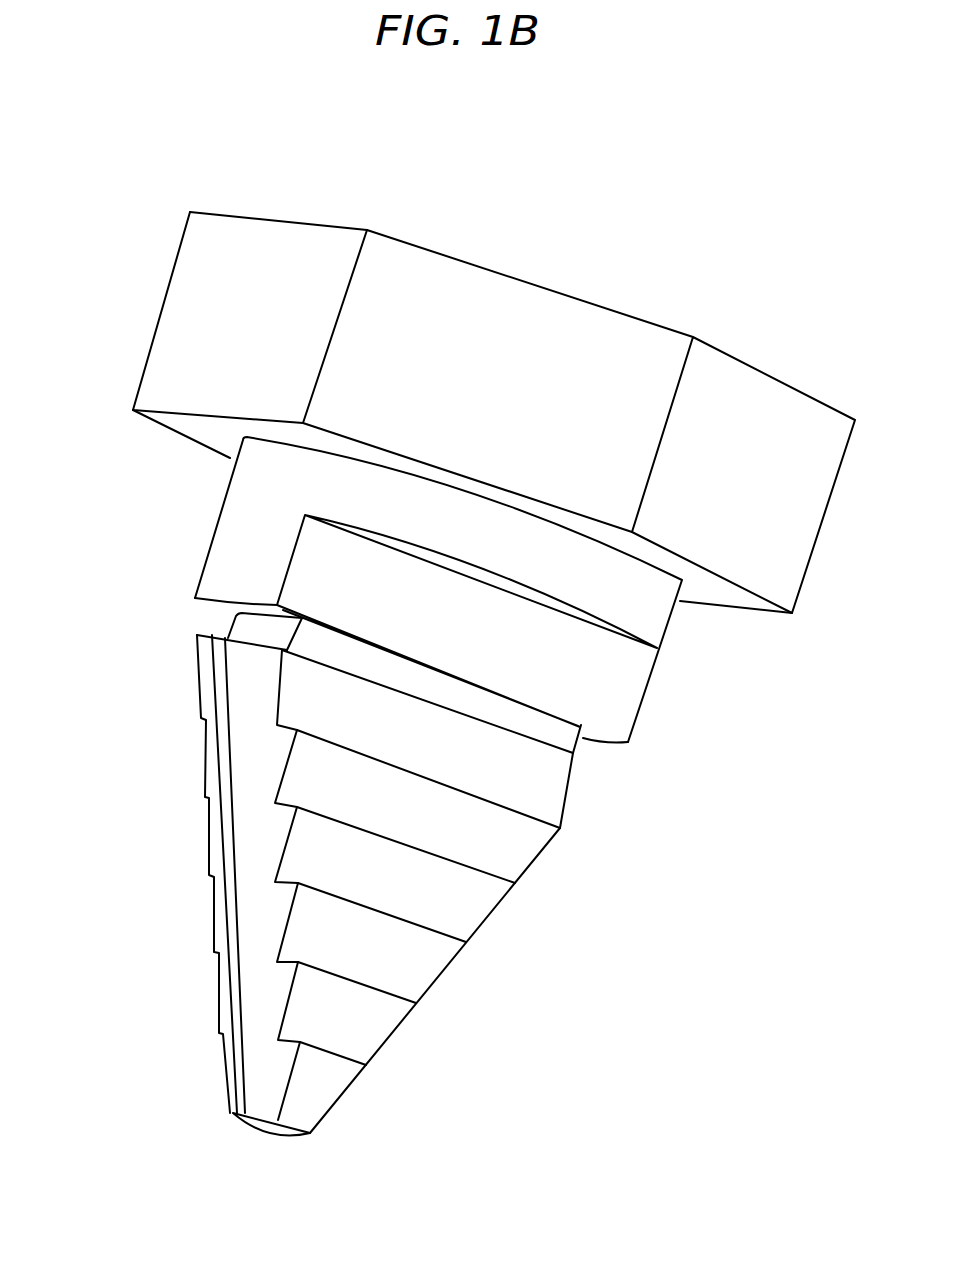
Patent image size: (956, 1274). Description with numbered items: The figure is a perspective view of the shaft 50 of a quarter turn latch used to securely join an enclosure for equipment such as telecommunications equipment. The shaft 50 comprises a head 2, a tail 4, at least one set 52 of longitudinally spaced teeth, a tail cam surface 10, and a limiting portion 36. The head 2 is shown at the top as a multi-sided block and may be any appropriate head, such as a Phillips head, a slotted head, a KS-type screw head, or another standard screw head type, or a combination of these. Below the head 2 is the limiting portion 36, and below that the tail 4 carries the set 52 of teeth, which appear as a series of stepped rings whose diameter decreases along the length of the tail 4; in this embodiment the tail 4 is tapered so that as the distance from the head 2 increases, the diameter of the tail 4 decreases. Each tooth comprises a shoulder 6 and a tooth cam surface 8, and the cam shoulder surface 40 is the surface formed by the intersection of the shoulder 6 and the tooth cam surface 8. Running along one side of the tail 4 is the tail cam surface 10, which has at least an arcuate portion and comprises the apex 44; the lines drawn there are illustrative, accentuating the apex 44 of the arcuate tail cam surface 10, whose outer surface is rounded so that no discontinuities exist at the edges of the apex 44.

The shaft 50 is at (92, 121).
The head 2 is at (259, 237).
The limiting portion 36 is at (625, 685).
The cam shoulder surface 40 is at (277, 725).
The set of longitudinally spaced teeth 52 is at (478, 942).
The shoulder 6 is at (527, 818).
The tooth cam surface 8 is at (518, 852).
The tail 4 is at (172, 813).
The apex 44 is at (228, 867).
The tail cam surface 10 is at (250, 940).